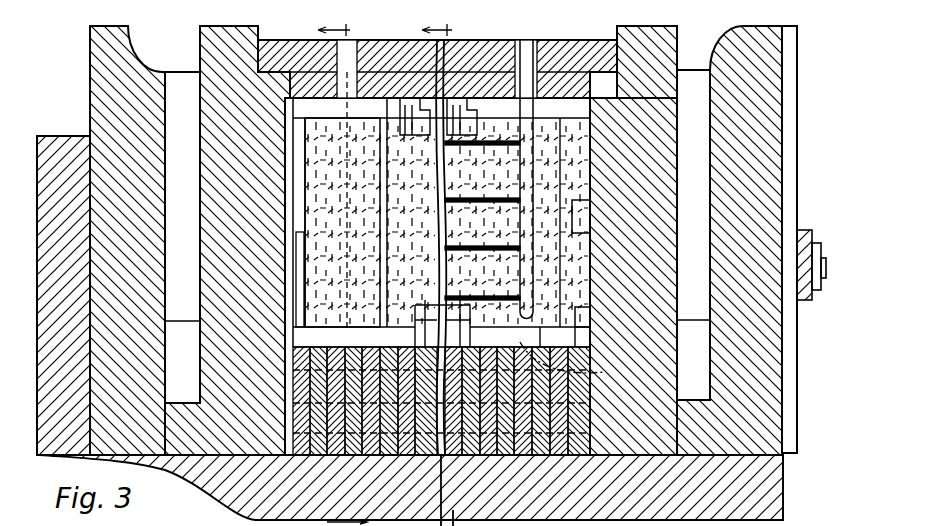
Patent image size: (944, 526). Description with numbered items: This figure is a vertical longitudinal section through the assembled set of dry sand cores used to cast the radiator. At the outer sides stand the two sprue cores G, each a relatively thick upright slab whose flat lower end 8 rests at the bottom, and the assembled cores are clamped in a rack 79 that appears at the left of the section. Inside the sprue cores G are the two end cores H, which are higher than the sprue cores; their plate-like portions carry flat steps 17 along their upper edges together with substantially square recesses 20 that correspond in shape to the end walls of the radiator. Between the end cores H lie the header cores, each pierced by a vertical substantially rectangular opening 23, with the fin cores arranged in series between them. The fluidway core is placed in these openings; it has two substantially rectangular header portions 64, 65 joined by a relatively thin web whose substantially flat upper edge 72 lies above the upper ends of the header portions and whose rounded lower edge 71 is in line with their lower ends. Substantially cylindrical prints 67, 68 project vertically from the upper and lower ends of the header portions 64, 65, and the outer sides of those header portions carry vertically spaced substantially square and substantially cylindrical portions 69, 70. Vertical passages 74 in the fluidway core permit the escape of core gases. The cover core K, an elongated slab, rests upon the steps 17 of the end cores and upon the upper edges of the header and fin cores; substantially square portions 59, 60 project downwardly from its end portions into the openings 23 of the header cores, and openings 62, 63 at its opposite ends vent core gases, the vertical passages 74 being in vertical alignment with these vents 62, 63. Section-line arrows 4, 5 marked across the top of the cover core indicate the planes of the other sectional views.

The flat end 8 is at (760, 455).
The rack 79 is at (52, 152).
The sprue core G is at (90, 48).
The end core H is at (210, 42).
The steps 17 is at (290, 72).
The square shaped portion 59 is at (300, 96).
The opening 62 is at (347, 185).
The opening 63 is at (530, 62).
The square shaped portion 60 is at (580, 78).
The header portion 65 is at (585, 186).
The section line 4 is at (340, 31).
The section line 5 is at (446, 31).
The square portion 69 is at (290, 133).
The square recess 20 is at (293, 163).
The header portion 64 is at (320, 215).
The cylindrical portion 70 is at (300, 252).
The upper edge of web 72 is at (402, 55).
The rectangular opening 23 is at (493, 252).
The cylindrical print 68 is at (553, 112).
The vertical passage 74 is at (585, 215).
The cylindrical print 67 is at (585, 338).
The lower edge of web 71 is at (592, 378).
The cover core K is at (225, 524).